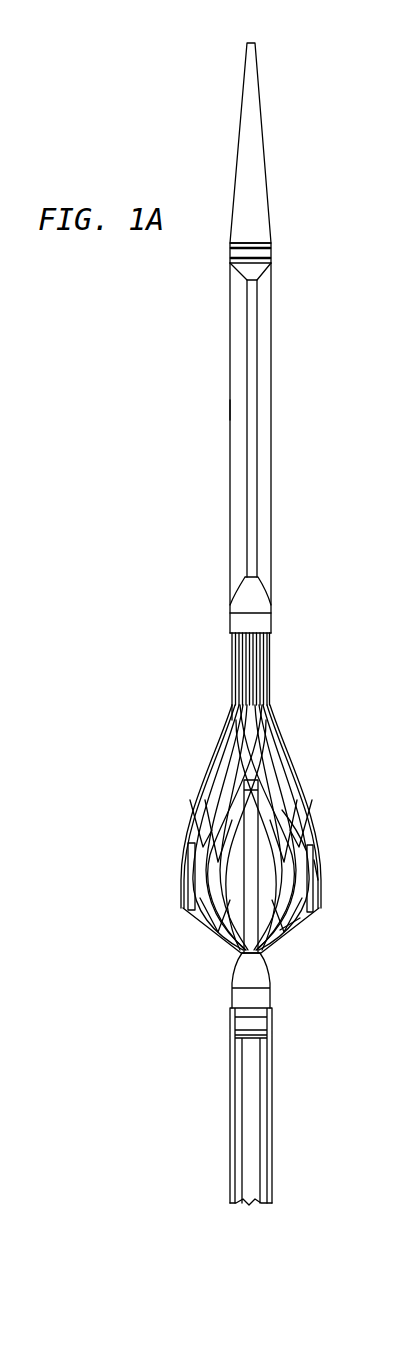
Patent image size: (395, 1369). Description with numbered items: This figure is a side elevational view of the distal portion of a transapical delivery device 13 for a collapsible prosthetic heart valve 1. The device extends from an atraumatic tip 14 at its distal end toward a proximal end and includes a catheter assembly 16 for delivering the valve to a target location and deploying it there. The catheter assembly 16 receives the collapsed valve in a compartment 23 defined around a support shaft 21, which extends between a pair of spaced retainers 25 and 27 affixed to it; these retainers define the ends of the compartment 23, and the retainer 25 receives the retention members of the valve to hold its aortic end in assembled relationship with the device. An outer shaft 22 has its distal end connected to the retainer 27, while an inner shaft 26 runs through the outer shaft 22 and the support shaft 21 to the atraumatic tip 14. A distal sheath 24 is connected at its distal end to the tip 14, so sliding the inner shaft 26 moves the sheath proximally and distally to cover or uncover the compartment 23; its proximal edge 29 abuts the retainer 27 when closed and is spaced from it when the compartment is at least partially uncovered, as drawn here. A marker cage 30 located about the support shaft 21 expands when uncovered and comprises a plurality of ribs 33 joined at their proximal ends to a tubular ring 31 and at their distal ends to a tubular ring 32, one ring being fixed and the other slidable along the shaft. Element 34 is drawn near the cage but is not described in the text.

The transapical delivery device 13 is at (231, 75).
The atraumatic tip 14 is at (252, 41).
The catheter assembly 16 is at (208, 476).
The distal sheath 24 is at (271, 427).
The inner shaft 26 is at (257, 331).
The retainer 25 is at (271, 601).
The proximal edge 29 is at (272, 690).
The compartment 23 is at (205, 744).
The collapsible prosthetic heart valve 1 is at (285, 755).
The tubular ring 32 is at (250, 790).
The support shaft 21 is at (294, 832).
The side rail 34 is at (322, 872).
The marker cage 30 is at (318, 877).
The tubular ring 31 is at (243, 953).
The ribs 33 is at (290, 935).
The retainer 27 is at (270, 980).
The outer shaft 22 is at (272, 1098).